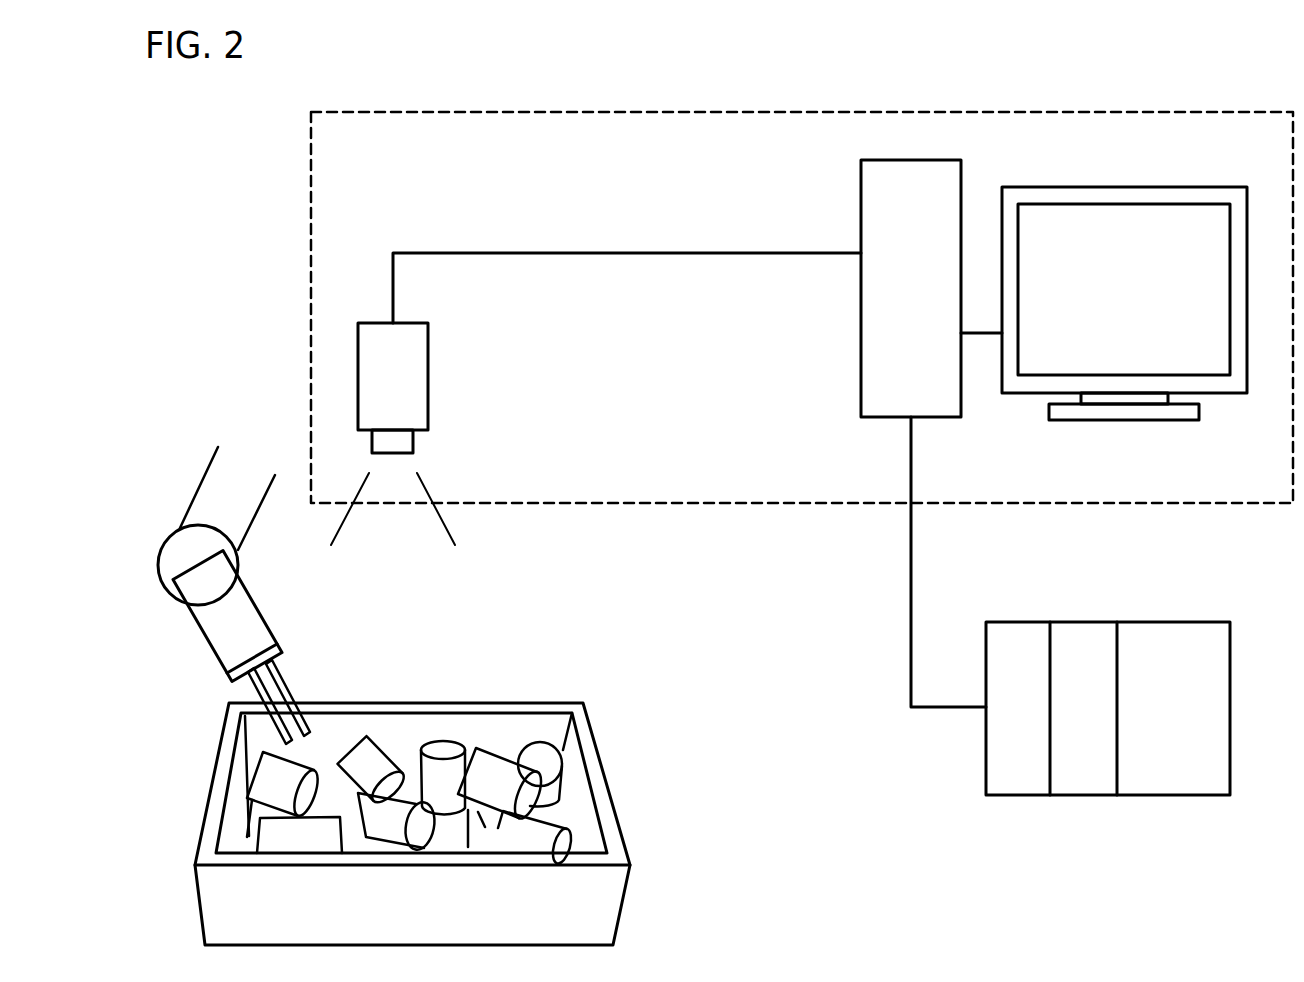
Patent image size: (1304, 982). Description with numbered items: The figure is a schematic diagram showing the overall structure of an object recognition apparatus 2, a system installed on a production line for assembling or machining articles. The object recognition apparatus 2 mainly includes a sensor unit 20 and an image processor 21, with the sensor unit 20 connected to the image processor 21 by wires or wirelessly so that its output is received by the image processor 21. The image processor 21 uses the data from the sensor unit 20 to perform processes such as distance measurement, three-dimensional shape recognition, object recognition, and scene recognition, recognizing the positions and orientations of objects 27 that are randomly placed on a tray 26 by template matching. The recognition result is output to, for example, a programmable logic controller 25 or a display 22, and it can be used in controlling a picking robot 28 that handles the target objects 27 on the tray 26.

The object recognition apparatus 2 is at (1200, 112).
The sensor unit 20 is at (367, 386).
The image processor 21 is at (905, 165).
The display 22 is at (1077, 190).
The programmable logic controller (PLC) 25 is at (1069, 622).
The tray 26 is at (607, 813).
The objects 27 is at (381, 764).
The picking robot 28 is at (210, 480).